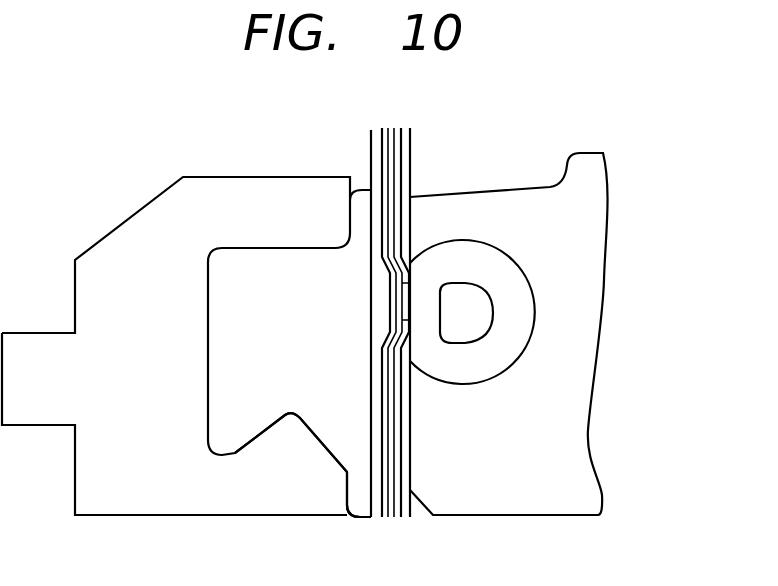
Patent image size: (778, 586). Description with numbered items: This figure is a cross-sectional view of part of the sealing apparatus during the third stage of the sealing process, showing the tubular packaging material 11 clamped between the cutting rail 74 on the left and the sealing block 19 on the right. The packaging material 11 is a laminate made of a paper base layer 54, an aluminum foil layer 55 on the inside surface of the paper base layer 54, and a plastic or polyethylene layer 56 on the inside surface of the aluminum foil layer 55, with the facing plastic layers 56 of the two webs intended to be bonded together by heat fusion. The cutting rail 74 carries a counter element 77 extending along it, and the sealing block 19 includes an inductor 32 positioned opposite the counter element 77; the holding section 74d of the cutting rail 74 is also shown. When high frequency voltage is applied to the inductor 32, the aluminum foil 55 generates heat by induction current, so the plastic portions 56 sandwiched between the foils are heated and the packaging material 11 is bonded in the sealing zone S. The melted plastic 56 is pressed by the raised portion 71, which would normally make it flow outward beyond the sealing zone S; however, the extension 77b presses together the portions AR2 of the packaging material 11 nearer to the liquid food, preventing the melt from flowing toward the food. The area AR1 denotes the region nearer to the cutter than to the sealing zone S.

The tubular packaging material 11 is at (381, 291).
The sealing block 19 is at (526, 185).
The inductor 32 is at (530, 315).
The paper base layer 54 is at (413, 142).
The aluminum foil layer 55 is at (408, 127).
The plastic film layer 56 is at (393, 127).
The raised portion 71 is at (397, 300).
The cutting rail 74 is at (165, 200).
The holding section 74d is at (317, 490).
The counter element 77 is at (210, 425).
The extension 77b is at (355, 495).
The area nearer to the cutter AR1 is at (410, 203).
The portions nearer to the liquid food AR2 is at (397, 378).
The sealing zone S is at (312, 258).